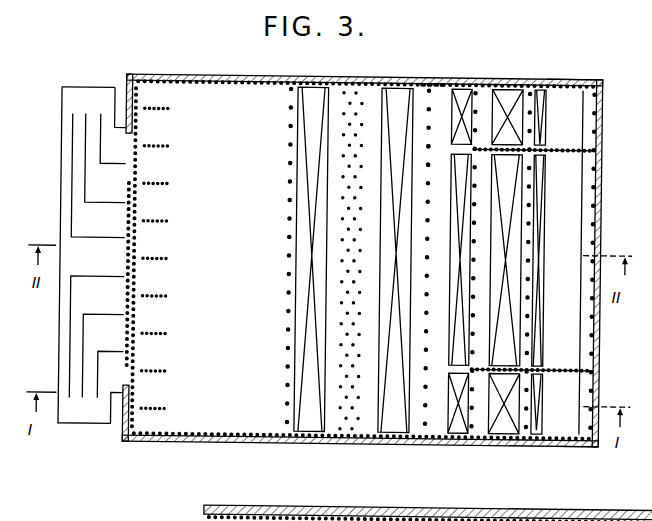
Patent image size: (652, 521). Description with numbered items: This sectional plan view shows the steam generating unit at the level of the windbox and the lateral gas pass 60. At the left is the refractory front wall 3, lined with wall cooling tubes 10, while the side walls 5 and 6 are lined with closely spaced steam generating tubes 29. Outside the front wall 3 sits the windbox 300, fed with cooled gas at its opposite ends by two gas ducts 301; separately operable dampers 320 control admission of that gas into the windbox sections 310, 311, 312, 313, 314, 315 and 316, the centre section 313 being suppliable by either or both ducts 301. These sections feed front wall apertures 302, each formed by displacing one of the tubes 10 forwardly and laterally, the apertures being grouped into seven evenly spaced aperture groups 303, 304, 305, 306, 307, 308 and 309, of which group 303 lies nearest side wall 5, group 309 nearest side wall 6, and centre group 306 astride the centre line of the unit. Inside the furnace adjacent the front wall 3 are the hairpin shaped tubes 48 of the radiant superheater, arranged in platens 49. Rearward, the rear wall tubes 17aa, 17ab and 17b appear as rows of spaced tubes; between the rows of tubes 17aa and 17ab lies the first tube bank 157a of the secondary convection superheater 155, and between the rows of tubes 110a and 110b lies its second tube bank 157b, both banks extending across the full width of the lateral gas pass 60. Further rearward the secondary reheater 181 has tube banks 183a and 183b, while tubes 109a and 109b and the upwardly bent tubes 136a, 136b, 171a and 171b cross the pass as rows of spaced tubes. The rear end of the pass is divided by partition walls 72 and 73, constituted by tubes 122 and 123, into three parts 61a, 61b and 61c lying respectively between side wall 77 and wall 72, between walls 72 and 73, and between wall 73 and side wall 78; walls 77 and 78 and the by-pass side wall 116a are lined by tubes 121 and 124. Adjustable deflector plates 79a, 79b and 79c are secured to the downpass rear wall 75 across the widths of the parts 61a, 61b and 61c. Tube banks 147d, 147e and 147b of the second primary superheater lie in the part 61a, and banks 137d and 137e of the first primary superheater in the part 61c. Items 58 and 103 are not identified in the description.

The windbox 300 is at (72, 145).
The gas ducts 301 is at (60, 109).
The dampers 320 is at (111, 120).
The windbox section 310 is at (110, 146).
The windbox section 311 is at (94, 182).
The windbox section 312 is at (89, 226).
The centre windbox section 313 is at (87, 262).
The windbox section 314 is at (84, 292).
The windbox section 315 is at (94, 339).
The windbox section 316 is at (111, 382).
The front wall 3 is at (129, 196).
The tubes 10 is at (129, 313).
The front wall apertures 302 is at (138, 156).
The aperture group 303 is at (146, 140).
The hairpin shaped tubes 48 is at (146, 150).
The aperture group 304 is at (142, 194).
The tube platens 49 is at (142, 226).
The aperture group 305 is at (142, 230).
The centre aperture group 306 is at (143, 262).
The aperture group 307 is at (143, 288).
The aperture group 308 is at (137, 328).
The aperture group 309 is at (135, 366).
The seal 58 is at (133, 382).
The side wall 5 is at (260, 77).
The side wall 6 is at (244, 439).
The steam generating tubes 29 is at (186, 80).
The tubes 121 is at (438, 81).
The side wall 77 is at (561, 78).
The side wall 103 is at (593, 292).
The rear wall 75 is at (600, 239).
The side wall 78 is at (585, 450).
The tubes 17aa is at (289, 182).
The secondary convection superheater 155 is at (312, 417).
The first tube bank 157a is at (313, 344).
The second tube bank 157b is at (387, 319).
The tubes 110b is at (359, 166).
The tubes 17b is at (348, 268).
The tubes 17ab is at (345, 313).
The tubes 124 is at (392, 442).
The lateral gas pass 60 is at (421, 417).
The tubes 110a is at (428, 146).
The tube bank 147e is at (458, 99).
The tube bank 147d is at (503, 99).
The downpass part 61a is at (555, 118).
The tubes 122 is at (565, 148).
The partition wall 72 is at (547, 150).
The adjustable deflector plate 79a is at (588, 106).
The adjustable deflector plate 79b is at (589, 174).
The adjustable deflector plate 79c is at (587, 385).
The tube bank 183a is at (465, 259).
The secondary reheater 181 is at (493, 310).
The second tube bank 183b is at (493, 194).
The tubes 109a is at (473, 220).
The tubes 109b is at (531, 202).
The downpass part 61b is at (555, 261).
The tubes 171a is at (538, 323).
The tubes 171b is at (540, 344).
The tubes 123 is at (564, 370).
The partition wall 73 is at (531, 381).
The tube bank 137e is at (457, 426).
The fourth tube bank 137d is at (505, 426).
The downpass part 61c is at (562, 430).
The tubes 136a is at (539, 435).
The tubes 136b is at (549, 444).
The tube bank 147b is at (392, 516).
The side wall 116a is at (234, 515).